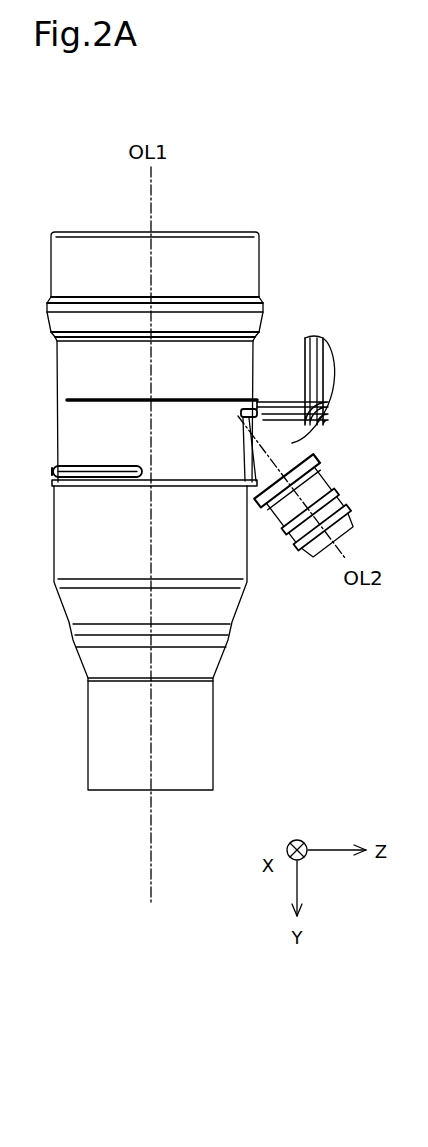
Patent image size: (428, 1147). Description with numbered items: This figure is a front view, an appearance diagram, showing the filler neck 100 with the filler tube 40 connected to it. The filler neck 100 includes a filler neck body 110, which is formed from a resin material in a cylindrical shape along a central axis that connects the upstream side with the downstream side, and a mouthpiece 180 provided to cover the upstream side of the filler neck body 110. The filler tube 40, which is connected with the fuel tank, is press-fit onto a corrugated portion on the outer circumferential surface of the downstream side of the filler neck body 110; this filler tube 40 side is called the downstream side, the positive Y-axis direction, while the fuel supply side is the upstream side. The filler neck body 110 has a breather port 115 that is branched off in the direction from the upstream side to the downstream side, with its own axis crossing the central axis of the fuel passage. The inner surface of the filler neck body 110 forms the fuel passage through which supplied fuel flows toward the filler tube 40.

The filler neck 100 is at (84, 204).
The mouthpiece 180 is at (222, 231).
The filler neck body 110 is at (252, 388).
The breather port 115 is at (328, 478).
The filler tube 40 is at (102, 790).